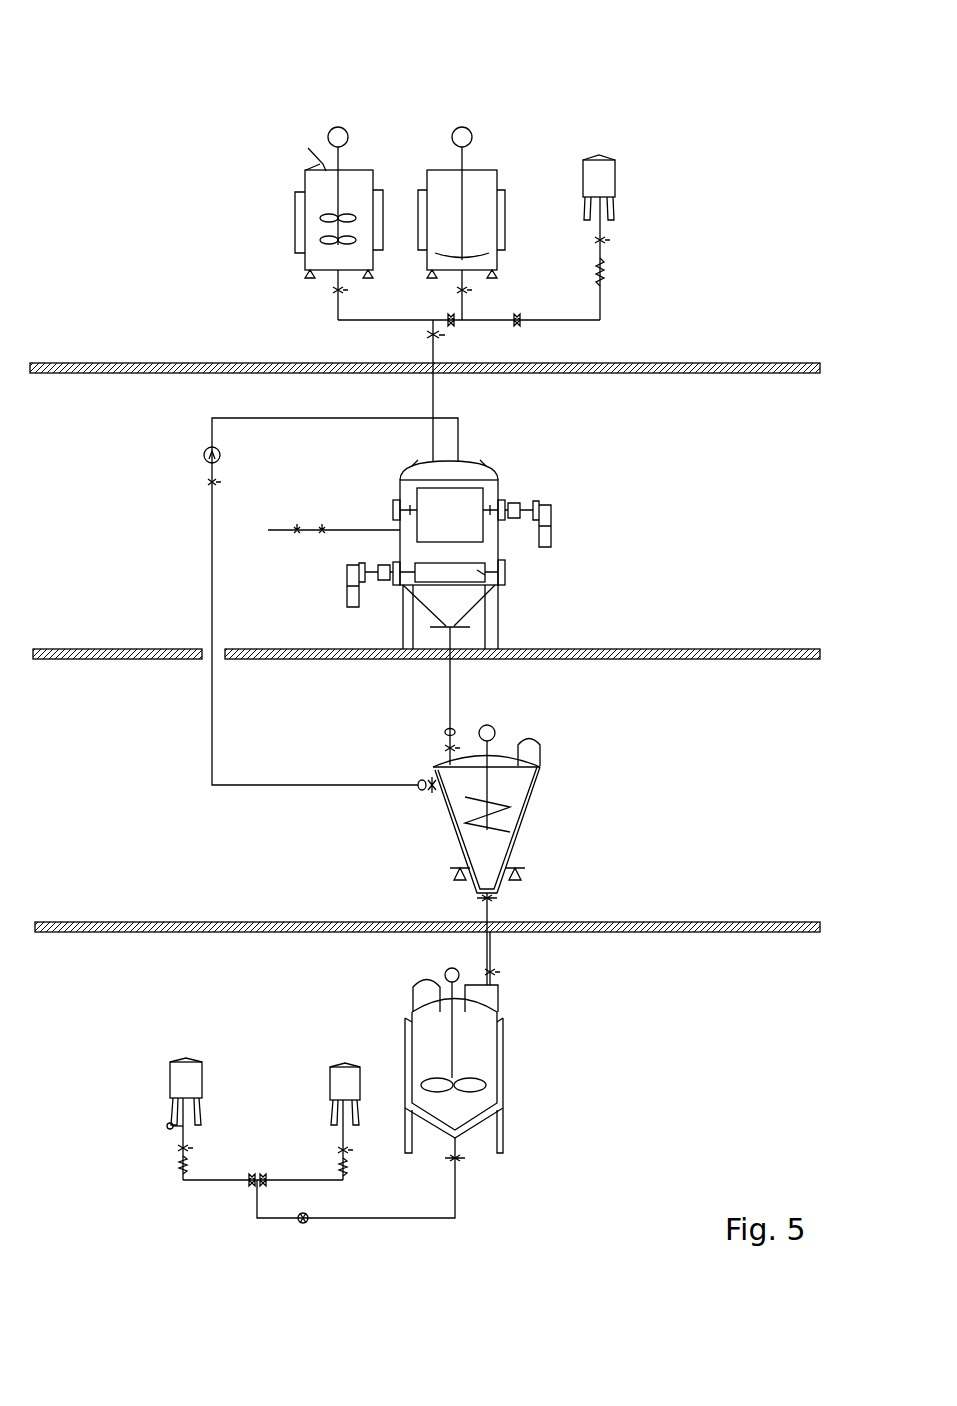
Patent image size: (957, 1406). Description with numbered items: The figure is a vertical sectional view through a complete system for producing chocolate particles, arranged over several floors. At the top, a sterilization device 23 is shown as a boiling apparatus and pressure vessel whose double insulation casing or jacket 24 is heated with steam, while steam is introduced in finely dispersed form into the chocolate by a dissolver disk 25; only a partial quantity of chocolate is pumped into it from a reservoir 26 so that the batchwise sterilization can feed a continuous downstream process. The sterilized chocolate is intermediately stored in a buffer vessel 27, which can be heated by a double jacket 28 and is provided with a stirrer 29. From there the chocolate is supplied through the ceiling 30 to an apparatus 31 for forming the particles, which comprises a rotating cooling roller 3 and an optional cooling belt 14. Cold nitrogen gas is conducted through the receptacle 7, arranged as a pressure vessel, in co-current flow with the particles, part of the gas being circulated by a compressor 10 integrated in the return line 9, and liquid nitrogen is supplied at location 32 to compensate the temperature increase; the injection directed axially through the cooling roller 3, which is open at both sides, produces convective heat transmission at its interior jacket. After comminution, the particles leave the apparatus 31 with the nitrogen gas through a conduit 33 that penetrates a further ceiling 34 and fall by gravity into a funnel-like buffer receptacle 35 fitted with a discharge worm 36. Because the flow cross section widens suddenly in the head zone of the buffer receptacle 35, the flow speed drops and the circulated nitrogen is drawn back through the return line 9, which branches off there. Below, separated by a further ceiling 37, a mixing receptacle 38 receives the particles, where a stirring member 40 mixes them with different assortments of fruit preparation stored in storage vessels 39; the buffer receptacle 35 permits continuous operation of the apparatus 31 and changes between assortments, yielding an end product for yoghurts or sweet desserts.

The cooling roller 3 is at (468, 505).
The receptacle 7 is at (468, 470).
The return line 9 is at (265, 605).
The compressor 10 is at (204, 455).
The cooling belt 14 is at (510, 580).
The sterilization device 23 is at (487, 163).
The double insulation casing or jacket 24 is at (422, 208).
The dissolver disk 25 is at (463, 212).
The reservoir 26 is at (620, 193).
The buffer vessel 27 is at (273, 187).
The double jacket 28 is at (298, 226).
The stirrer 29 is at (338, 218).
The ceiling 30 is at (705, 363).
The apparatus for forming the particles 31 is at (510, 516).
The location of liquid nitrogen supply 32 is at (398, 532).
The conduit 33 is at (450, 683).
The further ceiling 34 is at (690, 649).
The buffer receptacle 35 is at (557, 855).
The discharge worm 36 is at (505, 795).
The further ceiling 37 is at (675, 922).
The mixing receptacle 38 is at (482, 1077).
The storage vessels 39 is at (343, 1065).
The impeller of stirred tank 40 is at (455, 1085).